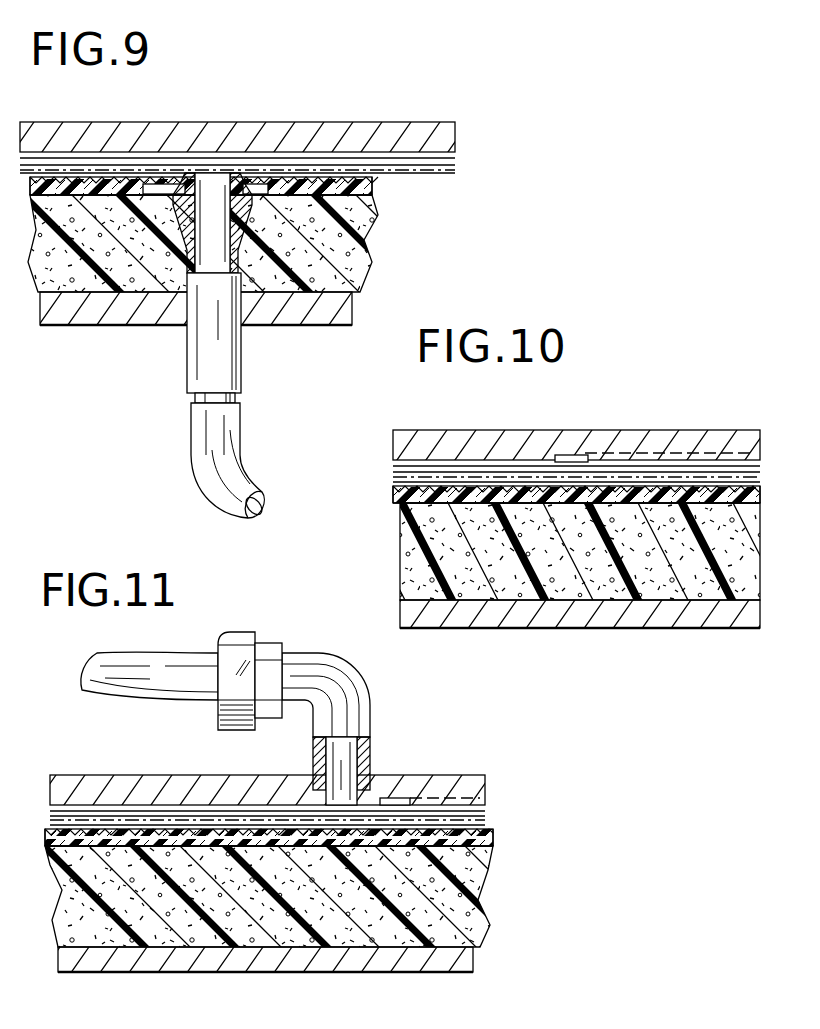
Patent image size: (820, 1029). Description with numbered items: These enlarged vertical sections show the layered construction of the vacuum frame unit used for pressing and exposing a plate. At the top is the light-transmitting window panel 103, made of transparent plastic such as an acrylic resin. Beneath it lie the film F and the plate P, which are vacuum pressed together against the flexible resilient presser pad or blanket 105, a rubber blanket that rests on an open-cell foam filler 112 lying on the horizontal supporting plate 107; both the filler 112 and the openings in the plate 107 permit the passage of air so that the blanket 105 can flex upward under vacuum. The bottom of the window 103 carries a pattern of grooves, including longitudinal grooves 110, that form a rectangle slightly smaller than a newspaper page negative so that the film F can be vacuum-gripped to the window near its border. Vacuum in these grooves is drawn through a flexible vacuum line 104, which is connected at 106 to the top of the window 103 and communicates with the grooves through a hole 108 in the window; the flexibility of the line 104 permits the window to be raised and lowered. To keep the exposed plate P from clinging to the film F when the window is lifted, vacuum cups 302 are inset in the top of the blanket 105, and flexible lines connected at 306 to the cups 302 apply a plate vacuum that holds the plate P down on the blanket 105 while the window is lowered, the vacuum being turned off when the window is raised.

In FIG. 9, the light-transmitting window panel 103 is at (418, 122).
In FIG. 10, the light-transmitting window panel 103 is at (462, 430).
In FIG. 11, the light-transmitting window panel 103 is at (485, 791).
In FIG. 9, the presser pad or blanket 105 is at (372, 184).
In FIG. 10, the presser pad or blanket 105 is at (393, 500).
In FIG. 11, the presser pad or blanket 105 is at (493, 841).
In FIG. 9, the horizontal supporting plate 107 is at (342, 326).
In FIG. 10, the horizontal supporting plate 107 is at (573, 629).
In FIG. 11, the horizontal supporting plate 107 is at (432, 973).
In FIG. 9, the open-cell foam filler 112 is at (370, 237).
In FIG. 10, the open-cell foam filler 112 is at (578, 455).
In FIG. 11, the open-cell foam filler 112 is at (485, 896).
In FIG. 10, the longitudinal groove 110 is at (643, 452).
In FIG. 11, the longitudinal groove 110 is at (434, 775).
In FIG. 9, the vacuum cup 302 is at (240, 172).
In FIG. 9, the connection of flexible lines to vacuum cups 306 is at (200, 468).
In FIG. 11, the vacuum line means 104 is at (110, 702).
In FIG. 11, the connection of vacuum line to window 106 is at (350, 691).
In FIG. 11, the hole in the window 108 is at (318, 786).
In FIG. 9, the film F is at (455, 158).
In FIG. 10, the film F is at (393, 466).
In FIG. 11, the film F is at (485, 810).
In FIG. 9, the plate P is at (455, 171).
In FIG. 10, the plate P is at (393, 478).
In FIG. 11, the plate P is at (485, 821).